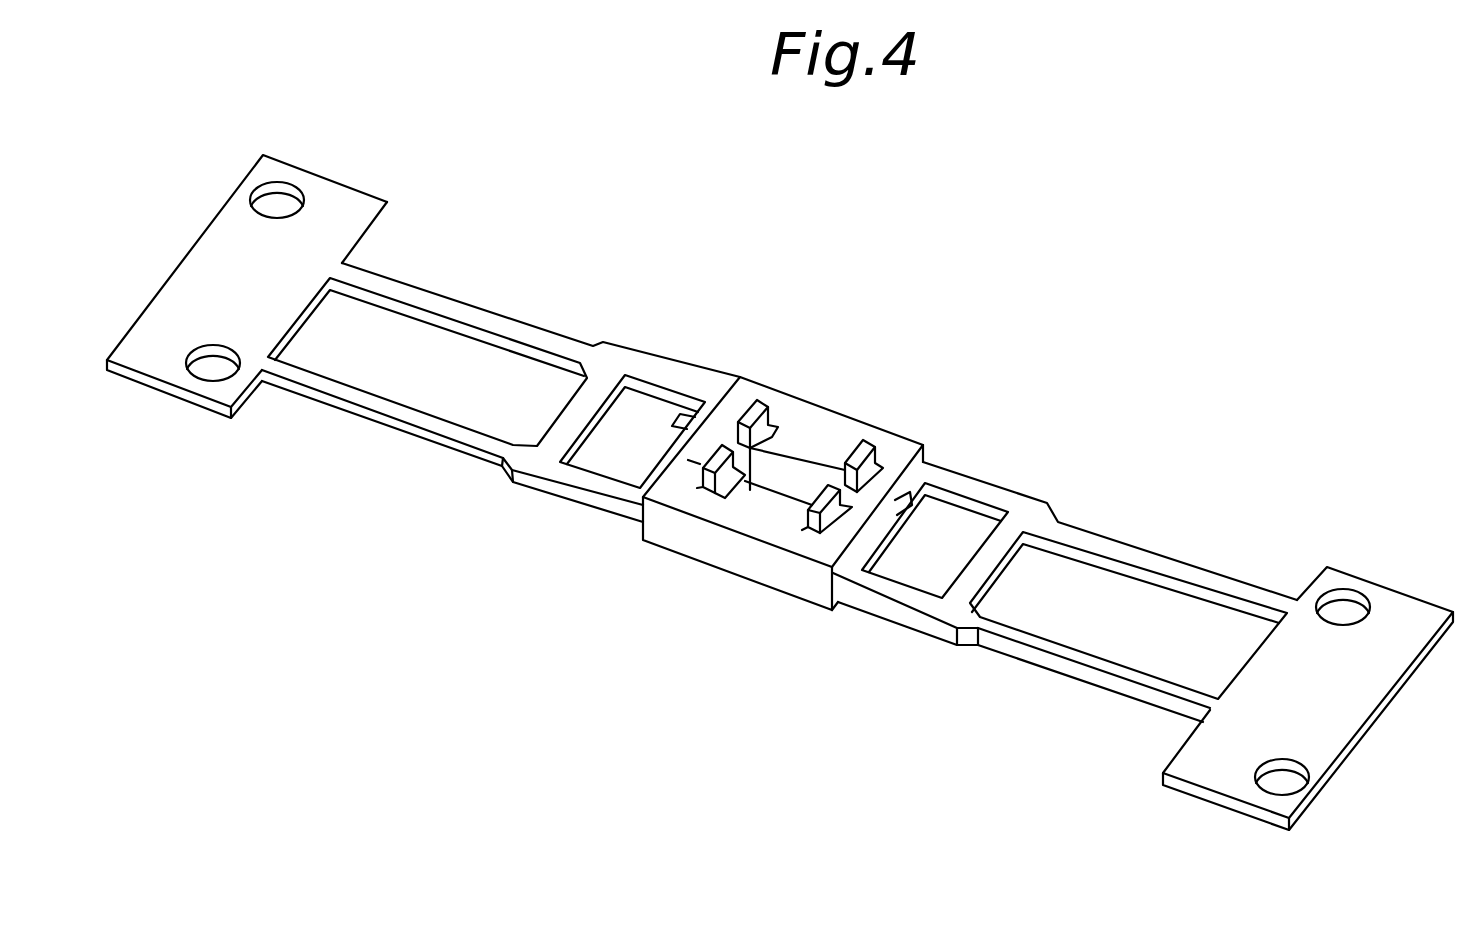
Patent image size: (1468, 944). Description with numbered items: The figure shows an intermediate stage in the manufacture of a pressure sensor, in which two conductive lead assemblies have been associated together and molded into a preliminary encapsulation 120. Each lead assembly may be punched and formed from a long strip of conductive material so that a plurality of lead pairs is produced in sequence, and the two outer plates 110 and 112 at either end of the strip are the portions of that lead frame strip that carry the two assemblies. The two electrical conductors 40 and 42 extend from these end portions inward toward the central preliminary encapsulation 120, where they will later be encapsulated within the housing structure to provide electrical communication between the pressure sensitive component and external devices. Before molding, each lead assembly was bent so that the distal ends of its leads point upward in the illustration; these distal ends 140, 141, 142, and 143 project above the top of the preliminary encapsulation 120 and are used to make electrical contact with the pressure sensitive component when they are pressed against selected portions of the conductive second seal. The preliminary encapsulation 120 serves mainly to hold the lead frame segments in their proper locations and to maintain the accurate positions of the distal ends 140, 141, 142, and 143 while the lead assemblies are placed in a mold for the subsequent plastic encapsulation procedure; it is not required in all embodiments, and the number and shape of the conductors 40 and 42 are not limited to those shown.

The first mounting plate 110 is at (335, 190).
The second mounting plate 112 is at (1233, 783).
The electrical conductor 40 is at (515, 325).
The electrical conductor 42 is at (1185, 565).
The preliminary encapsulation 120 is at (905, 446).
The distal end 140 is at (752, 400).
The distal end 141 is at (703, 476).
The distal end 142 is at (863, 448).
The distal end 143 is at (820, 526).